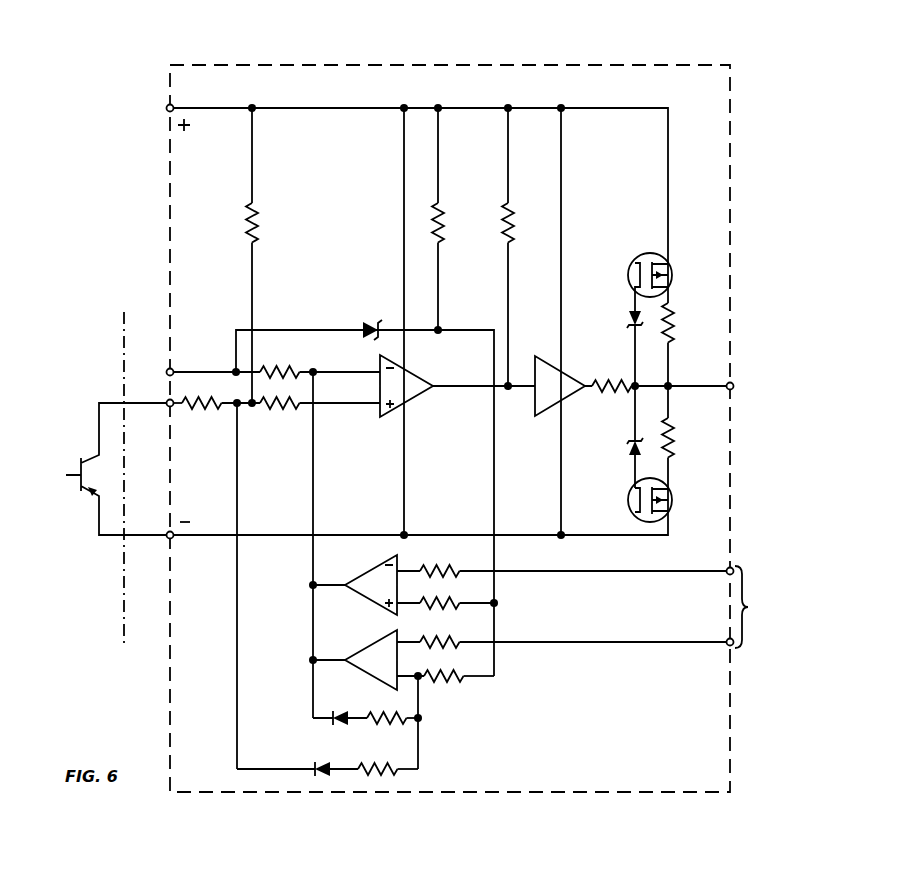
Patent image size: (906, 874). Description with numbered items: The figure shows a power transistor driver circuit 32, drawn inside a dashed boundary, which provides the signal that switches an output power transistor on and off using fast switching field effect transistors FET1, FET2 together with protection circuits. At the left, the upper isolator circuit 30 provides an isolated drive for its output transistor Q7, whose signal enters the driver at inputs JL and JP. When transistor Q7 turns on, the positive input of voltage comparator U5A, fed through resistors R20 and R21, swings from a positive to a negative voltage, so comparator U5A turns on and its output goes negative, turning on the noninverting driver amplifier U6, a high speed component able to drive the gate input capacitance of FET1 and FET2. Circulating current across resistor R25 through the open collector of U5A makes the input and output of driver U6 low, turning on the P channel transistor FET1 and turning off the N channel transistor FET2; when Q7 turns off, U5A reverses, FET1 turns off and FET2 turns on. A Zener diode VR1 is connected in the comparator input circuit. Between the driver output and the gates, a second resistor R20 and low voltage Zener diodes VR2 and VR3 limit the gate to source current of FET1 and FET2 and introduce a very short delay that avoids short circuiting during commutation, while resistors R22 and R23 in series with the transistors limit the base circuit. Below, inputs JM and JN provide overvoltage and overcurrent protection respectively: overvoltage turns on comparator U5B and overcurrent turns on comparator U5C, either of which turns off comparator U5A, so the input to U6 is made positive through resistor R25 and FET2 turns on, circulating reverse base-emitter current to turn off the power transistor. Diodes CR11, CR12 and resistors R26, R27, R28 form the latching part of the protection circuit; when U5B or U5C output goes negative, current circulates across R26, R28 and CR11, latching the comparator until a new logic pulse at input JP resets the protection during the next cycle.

The upper isolator circuit 30 is at (124, 328).
The power transistor driver circuit 32 is at (232, 66).
The output transistor Q7 is at (116, 469).
The input JL is at (186, 372).
The input JP is at (162, 414).
The resistor R20 is at (425, 394).
The resistor R21 is at (280, 414).
The resistor R25 is at (525, 249).
The Zener diode VR1 is at (368, 316).
The voltage comparator U5A is at (457, 386).
The noninverting driver amplifier U6 is at (560, 386).
The P channel field effect transistor FET1 is at (671, 276).
The N channel field effect transistor FET2 is at (671, 494).
The Zener diode VR2 is at (612, 348).
The Zener diode VR3 is at (612, 437).
The resistor R22 is at (687, 341).
The resistor R23 is at (687, 432).
The input JM is at (597, 560).
The input JN is at (597, 654).
The comparator U5B is at (403, 585).
The comparator U5C is at (384, 660).
The diode CR11 is at (340, 708).
The diode CR12 is at (297, 759).
The resistor R26 is at (392, 708).
The resistor R27 is at (388, 759).
The resistor R28 is at (454, 691).